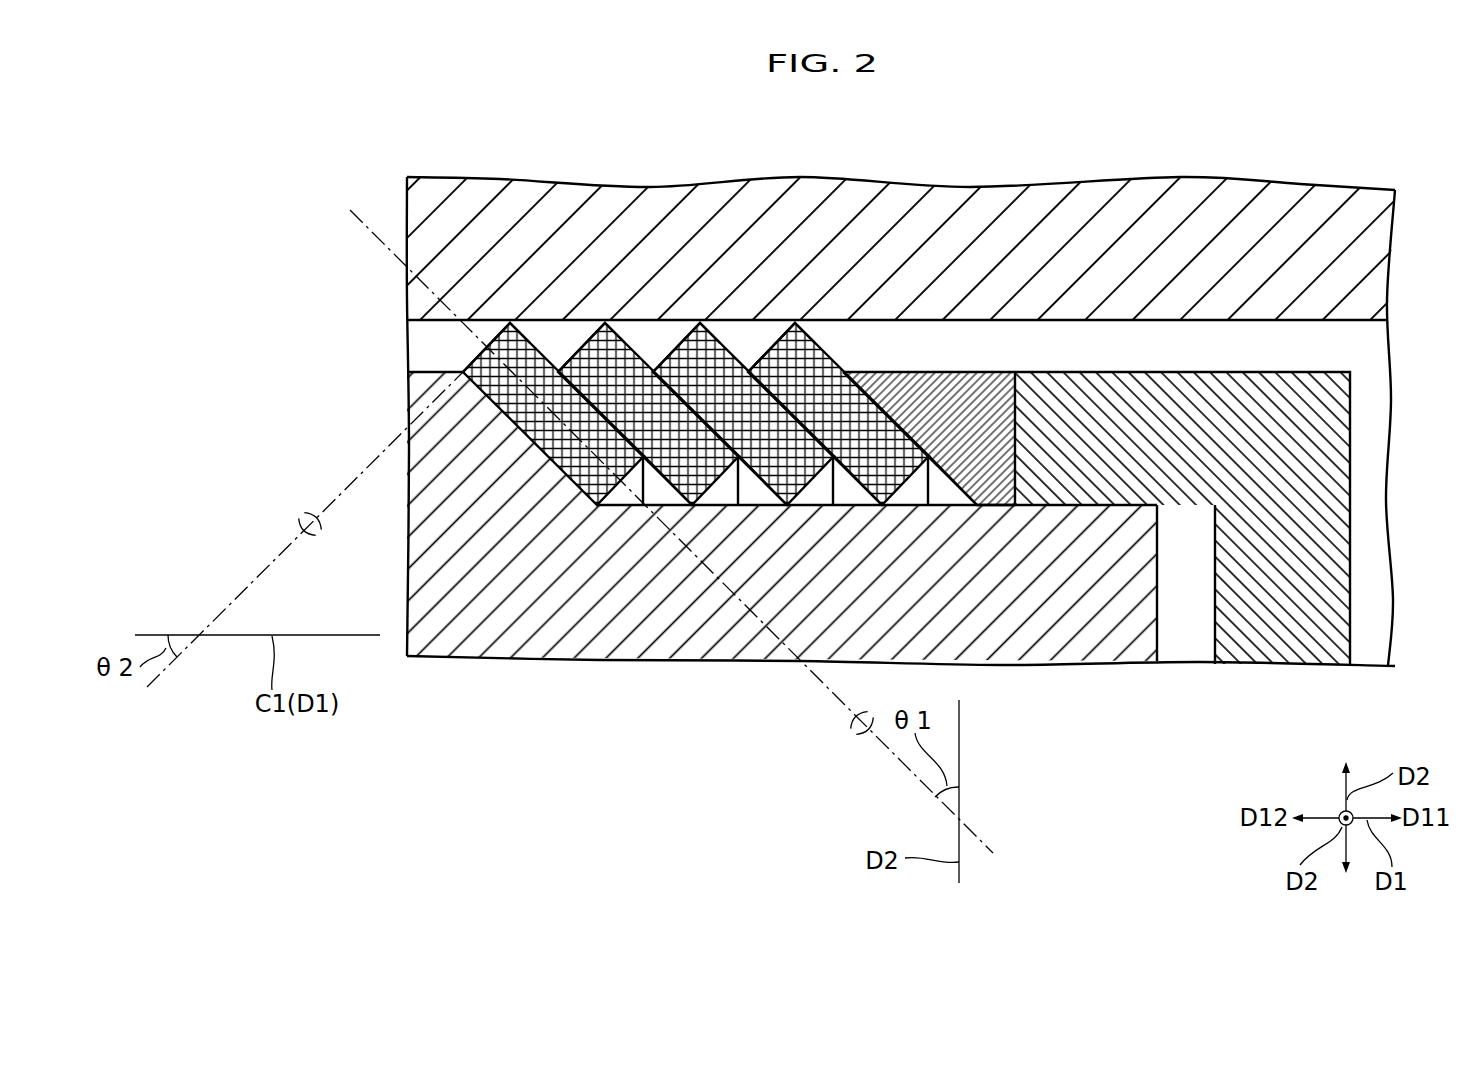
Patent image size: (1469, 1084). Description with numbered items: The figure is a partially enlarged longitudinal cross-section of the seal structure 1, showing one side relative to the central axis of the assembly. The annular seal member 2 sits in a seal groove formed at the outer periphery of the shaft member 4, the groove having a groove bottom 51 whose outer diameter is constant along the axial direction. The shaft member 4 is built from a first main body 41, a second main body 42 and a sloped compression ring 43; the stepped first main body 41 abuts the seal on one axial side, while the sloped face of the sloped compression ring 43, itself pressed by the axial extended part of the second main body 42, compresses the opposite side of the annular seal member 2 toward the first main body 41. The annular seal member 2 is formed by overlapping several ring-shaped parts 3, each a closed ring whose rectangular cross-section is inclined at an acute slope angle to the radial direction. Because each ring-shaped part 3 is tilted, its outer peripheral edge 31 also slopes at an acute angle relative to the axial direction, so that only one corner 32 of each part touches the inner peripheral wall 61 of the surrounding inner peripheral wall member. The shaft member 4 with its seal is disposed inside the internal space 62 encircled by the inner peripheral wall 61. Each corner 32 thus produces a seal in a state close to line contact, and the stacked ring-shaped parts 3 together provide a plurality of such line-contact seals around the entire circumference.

The seal structure 1 is at (308, 112).
The annular seal member 2 is at (843, 353).
The ring-shaped part 3 is at (815, 343).
The corner 32 is at (795, 325).
The outer peripheral edge 31 is at (470, 371).
The shaft member 4 is at (830, 569).
The first main body 41 is at (650, 660).
The second main body 42 is at (1288, 663).
The sloped compression ring 43 is at (1135, 186).
The groove bottom 51 is at (998, 378).
The inner peripheral wall 61 is at (432, 320).
The internal space 62 is at (1362, 350).